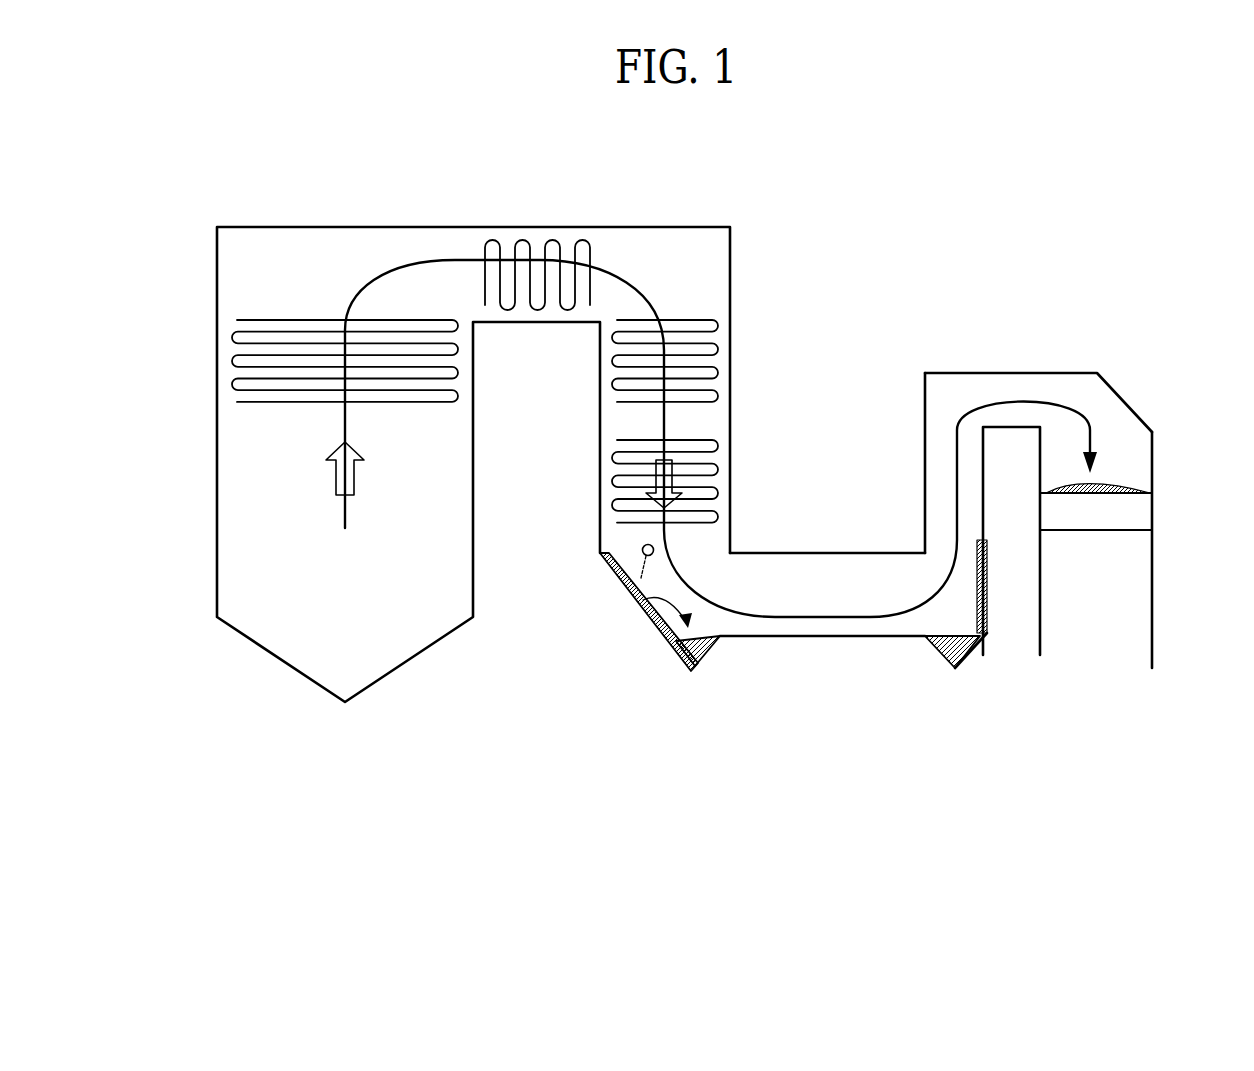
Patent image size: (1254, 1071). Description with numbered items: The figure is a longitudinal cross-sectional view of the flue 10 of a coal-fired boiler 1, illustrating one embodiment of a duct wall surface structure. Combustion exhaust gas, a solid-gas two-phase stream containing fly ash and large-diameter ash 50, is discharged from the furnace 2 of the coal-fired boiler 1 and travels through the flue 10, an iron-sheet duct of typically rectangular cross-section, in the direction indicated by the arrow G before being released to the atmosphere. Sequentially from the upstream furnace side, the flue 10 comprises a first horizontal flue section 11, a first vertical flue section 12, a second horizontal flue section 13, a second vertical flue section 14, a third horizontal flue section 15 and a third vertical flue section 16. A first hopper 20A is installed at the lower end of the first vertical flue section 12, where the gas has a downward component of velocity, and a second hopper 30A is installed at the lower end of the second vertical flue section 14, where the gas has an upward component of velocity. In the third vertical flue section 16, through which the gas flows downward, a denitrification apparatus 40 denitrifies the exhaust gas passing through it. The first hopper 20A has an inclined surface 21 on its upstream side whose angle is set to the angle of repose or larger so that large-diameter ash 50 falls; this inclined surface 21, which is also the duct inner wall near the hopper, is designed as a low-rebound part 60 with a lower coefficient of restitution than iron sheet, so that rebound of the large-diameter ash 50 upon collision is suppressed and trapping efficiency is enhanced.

The coal-fired boiler 1 is at (207, 467).
The furnace 2 is at (238, 430).
The flue 10 is at (828, 657).
The first horizontal flue section 11 is at (539, 240).
The first vertical flue section 12 is at (700, 422).
The second horizontal flue section 13 is at (823, 578).
The second vertical flue section 14 is at (937, 455).
The third horizontal flue section 15 is at (1013, 390).
The third vertical flue section 16 is at (1128, 590).
The first hopper 20A is at (712, 680).
The inclined surface 21 is at (617, 580).
The second hopper 30A is at (937, 683).
The denitrification apparatus 40 is at (1132, 512).
The large-diameter ash 50 is at (642, 547).
The low-rebound part 60 is at (613, 552).
The arrow indicating combustion exhaust gas flow G is at (617, 276).